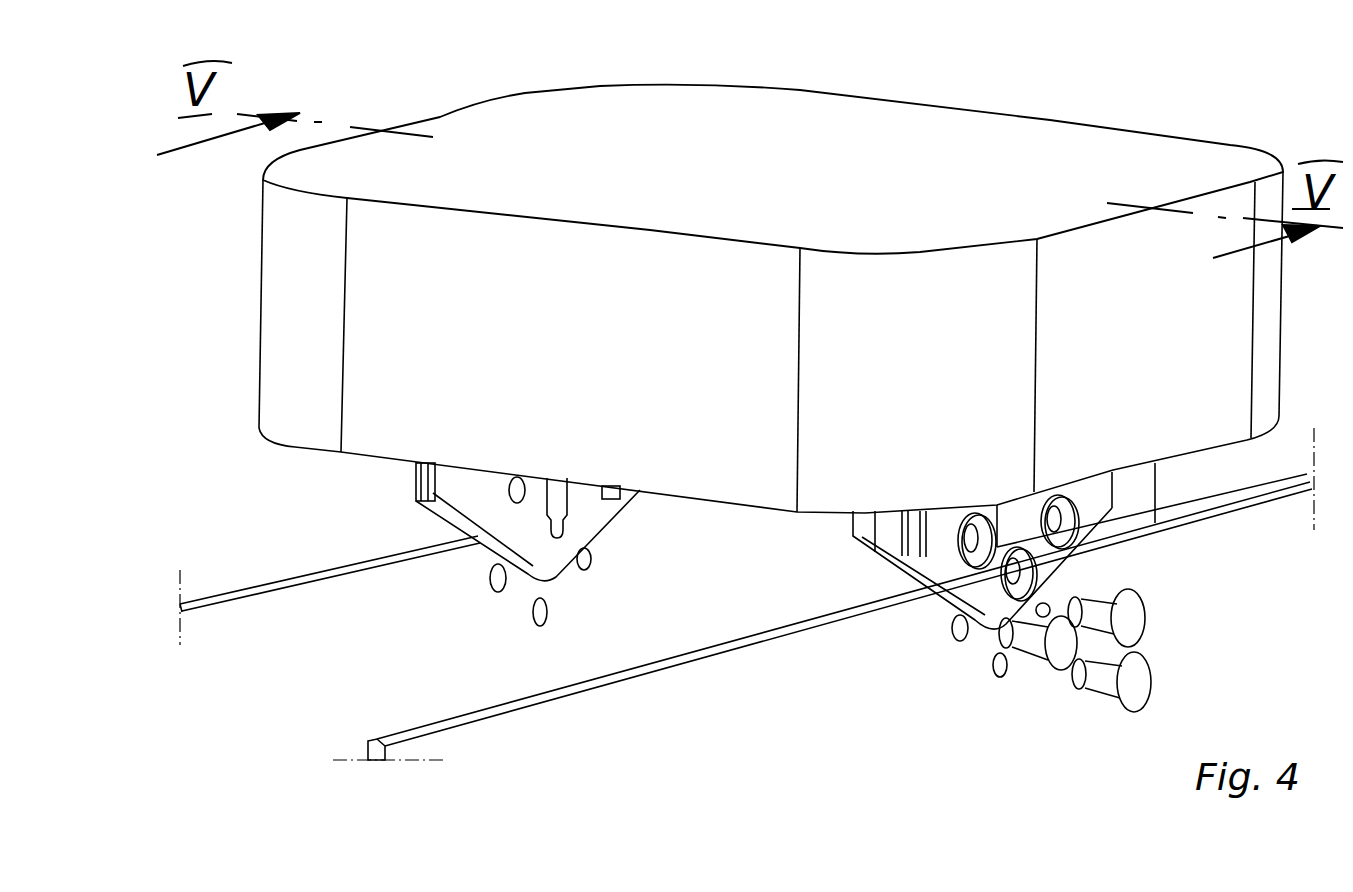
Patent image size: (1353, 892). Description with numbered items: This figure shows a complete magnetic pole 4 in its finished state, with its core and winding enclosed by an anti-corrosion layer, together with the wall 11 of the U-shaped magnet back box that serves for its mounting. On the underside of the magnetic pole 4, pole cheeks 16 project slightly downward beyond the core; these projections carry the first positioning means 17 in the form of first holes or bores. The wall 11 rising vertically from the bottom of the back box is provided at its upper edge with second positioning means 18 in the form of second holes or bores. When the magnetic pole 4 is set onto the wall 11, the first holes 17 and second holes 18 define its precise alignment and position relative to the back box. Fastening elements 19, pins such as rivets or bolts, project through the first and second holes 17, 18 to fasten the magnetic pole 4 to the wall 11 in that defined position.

The magnetic pole 4 is at (835, 145).
The wall 11 is at (277, 588).
The pole cheek 16 is at (452, 493).
The first positioning means 17 is at (1012, 575).
The second positioning means 18 is at (583, 567).
The fastening element 19 is at (1020, 652).